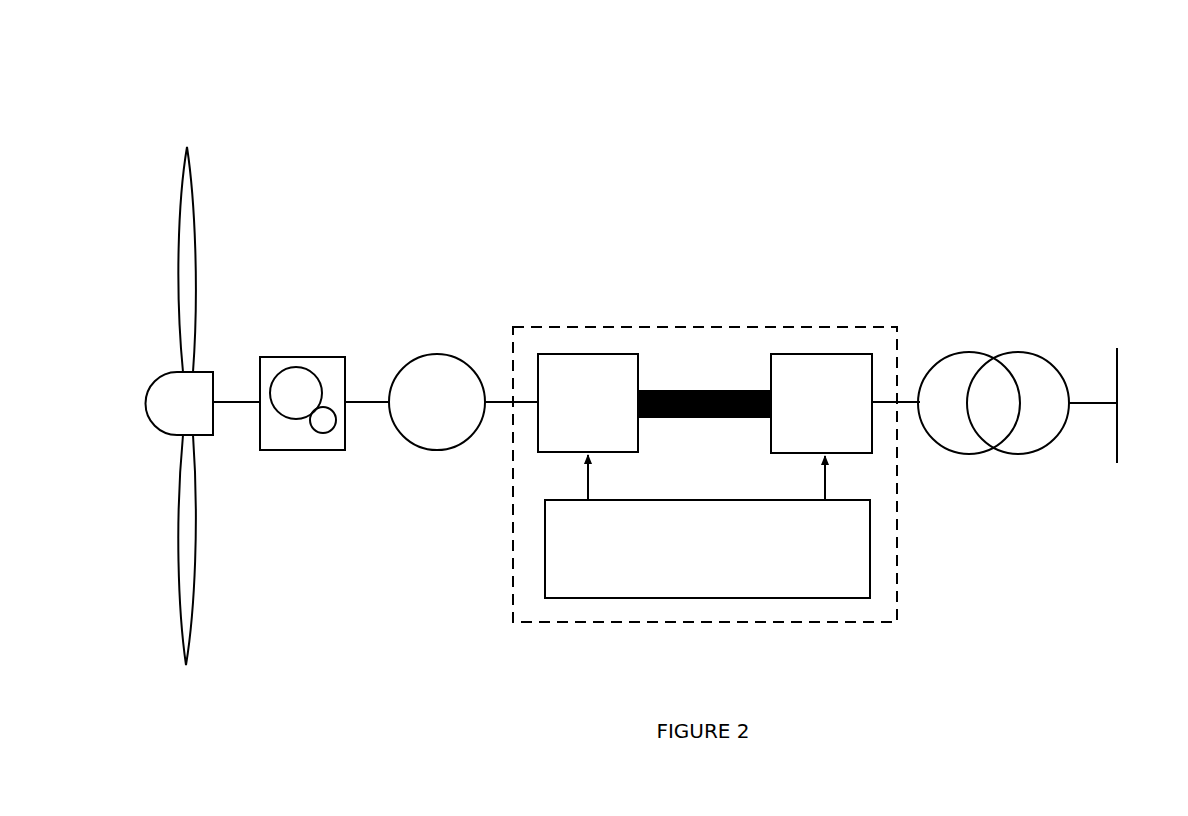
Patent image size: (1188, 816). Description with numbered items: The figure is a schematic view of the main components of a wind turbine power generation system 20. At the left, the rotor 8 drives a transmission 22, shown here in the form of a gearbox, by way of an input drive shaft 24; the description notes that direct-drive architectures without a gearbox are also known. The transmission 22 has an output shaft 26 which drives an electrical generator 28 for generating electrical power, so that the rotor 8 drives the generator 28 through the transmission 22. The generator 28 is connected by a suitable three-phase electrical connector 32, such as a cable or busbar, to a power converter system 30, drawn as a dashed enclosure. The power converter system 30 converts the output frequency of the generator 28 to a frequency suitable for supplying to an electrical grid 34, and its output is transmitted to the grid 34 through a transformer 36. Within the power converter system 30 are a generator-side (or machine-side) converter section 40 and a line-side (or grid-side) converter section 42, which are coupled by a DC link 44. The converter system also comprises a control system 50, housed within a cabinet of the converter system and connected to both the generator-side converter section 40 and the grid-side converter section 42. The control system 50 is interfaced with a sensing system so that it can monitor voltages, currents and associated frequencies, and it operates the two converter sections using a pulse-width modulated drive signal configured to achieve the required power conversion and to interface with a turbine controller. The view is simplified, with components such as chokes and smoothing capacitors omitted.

The rotor 8 is at (229, 247).
The power generation system 20 is at (898, 135).
The transmission 22 is at (303, 357).
The input drive shaft 24 is at (249, 405).
The output shaft 26 is at (375, 406).
The electrical generator 28 is at (433, 352).
The power converter system 30 is at (545, 327).
The three-phase electrical connector 32 is at (506, 403).
The electrical grid 34 is at (1118, 372).
The transformer 36 is at (1020, 455).
The generator-side converter section 40 is at (588, 403).
The grid-side converter section 42 is at (821, 403).
The DC link 44 is at (700, 390).
The control system 50 is at (707, 526).